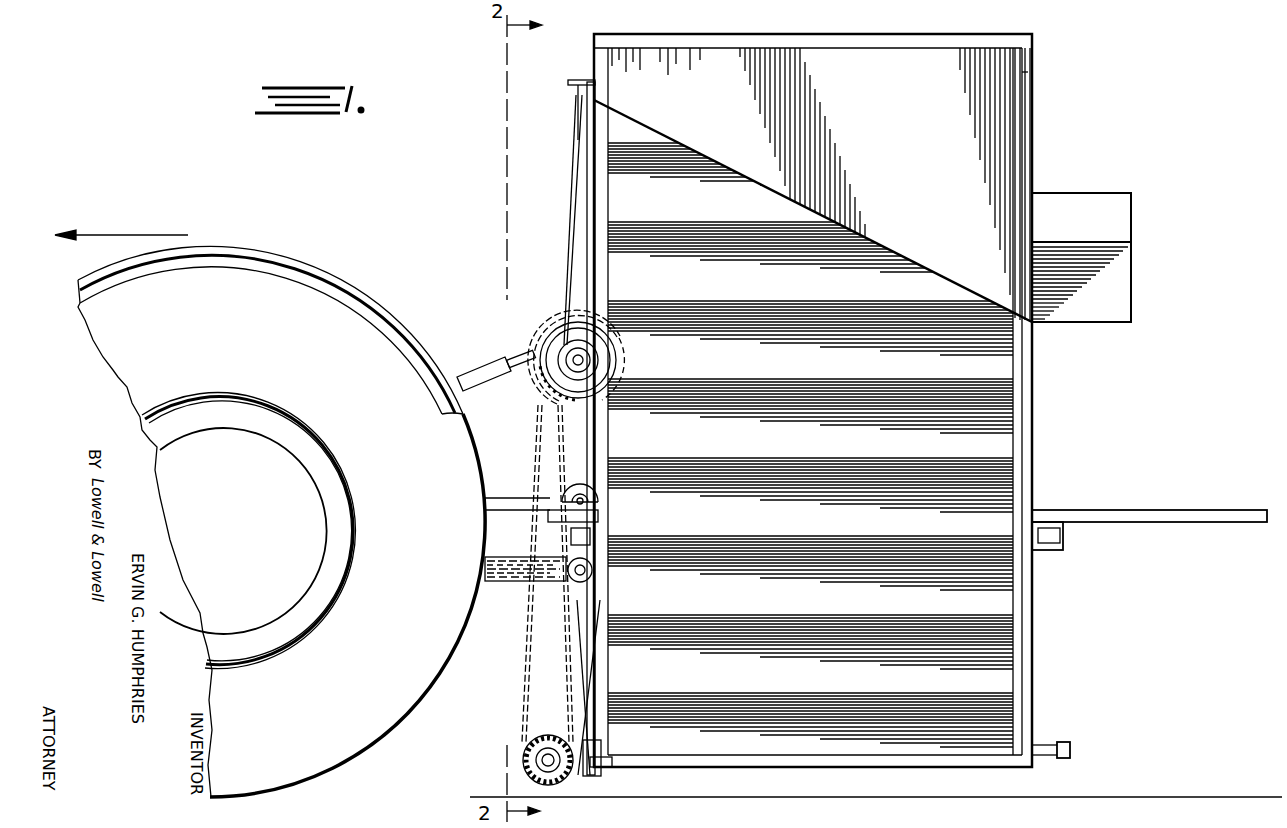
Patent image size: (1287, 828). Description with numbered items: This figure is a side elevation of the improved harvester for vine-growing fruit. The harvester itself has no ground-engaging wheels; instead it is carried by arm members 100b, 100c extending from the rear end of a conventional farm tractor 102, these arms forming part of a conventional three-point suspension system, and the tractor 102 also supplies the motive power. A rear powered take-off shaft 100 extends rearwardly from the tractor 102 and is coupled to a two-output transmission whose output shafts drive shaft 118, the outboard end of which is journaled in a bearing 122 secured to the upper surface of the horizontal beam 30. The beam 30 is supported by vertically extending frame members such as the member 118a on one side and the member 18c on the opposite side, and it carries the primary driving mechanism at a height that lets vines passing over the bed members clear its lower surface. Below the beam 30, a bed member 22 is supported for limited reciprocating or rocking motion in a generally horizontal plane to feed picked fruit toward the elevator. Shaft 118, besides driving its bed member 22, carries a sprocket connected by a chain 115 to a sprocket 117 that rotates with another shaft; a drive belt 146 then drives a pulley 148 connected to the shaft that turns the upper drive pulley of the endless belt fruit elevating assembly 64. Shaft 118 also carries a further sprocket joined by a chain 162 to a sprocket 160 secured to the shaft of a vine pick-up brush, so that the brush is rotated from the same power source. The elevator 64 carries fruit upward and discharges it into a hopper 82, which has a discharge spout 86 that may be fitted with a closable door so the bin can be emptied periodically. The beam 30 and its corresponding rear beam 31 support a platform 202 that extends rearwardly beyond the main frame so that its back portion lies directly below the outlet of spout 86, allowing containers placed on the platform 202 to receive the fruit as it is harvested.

The farm tractor 102 is at (302, 256).
The rear powered take-off shaft 100 is at (497, 512).
The arm member 100b is at (487, 570).
The arm member 100c is at (478, 368).
The horizontal beam 30 is at (571, 538).
The bearing 122 is at (566, 497).
The shaft 118 is at (584, 490).
The vertical frame member 118a is at (603, 675).
The pulley 148 is at (570, 105).
The drive belt 146 is at (572, 228).
The sprocket 117 is at (562, 328).
The chain 115 is at (540, 423).
The chain 162 is at (548, 640).
The sprocket 160 is at (530, 750).
The fruit elevating assembly 64 is at (1055, 405).
The hopper 82 is at (886, 111).
The discharge spout 86 is at (1096, 228).
The vertical frame member 18c is at (1032, 635).
The platform 202 is at (1092, 503).
The rear beam 31 is at (1065, 535).
The bed member 22 is at (1048, 748).